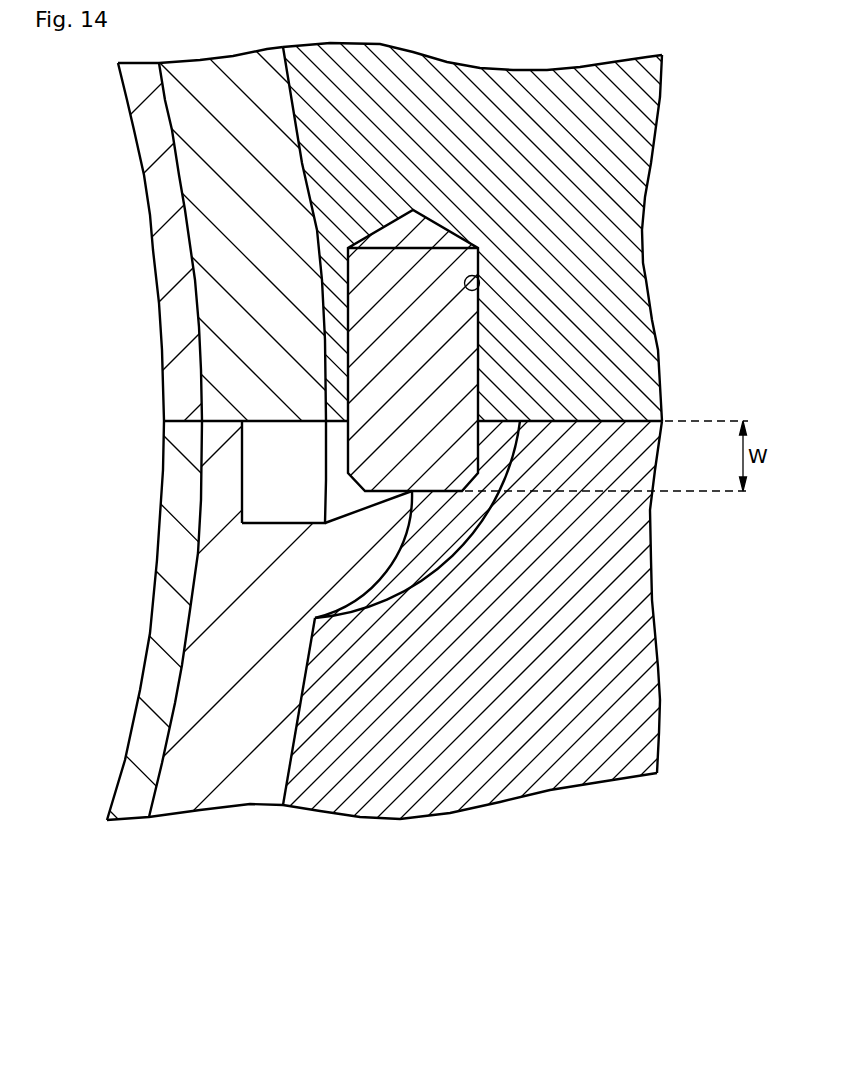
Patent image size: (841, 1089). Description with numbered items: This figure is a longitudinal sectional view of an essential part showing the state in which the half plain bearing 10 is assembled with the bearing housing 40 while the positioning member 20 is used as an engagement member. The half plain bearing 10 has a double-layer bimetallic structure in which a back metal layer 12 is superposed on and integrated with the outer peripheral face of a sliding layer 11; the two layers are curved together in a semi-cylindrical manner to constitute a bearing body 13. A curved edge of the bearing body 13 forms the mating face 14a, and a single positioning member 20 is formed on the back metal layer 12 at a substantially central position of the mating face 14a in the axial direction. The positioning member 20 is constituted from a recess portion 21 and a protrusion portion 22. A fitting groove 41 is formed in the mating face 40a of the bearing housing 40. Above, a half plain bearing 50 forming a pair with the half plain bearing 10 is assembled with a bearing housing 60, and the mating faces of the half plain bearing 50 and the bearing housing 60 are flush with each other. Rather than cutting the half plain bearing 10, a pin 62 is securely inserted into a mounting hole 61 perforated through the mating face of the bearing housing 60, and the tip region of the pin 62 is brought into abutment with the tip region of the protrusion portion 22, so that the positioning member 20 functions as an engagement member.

The half plain bearing 10 is at (122, 579).
The sliding layer 11 is at (133, 815).
The back metal layer 12 is at (172, 810).
The bearing body 13 is at (188, 882).
The mating face 14a is at (174, 404).
The positioning member 20 is at (291, 488).
The recess portion 21 is at (240, 446).
The protrusion portion 22 is at (404, 508).
The bearing housing 40 is at (550, 788).
The mating face 40a is at (626, 407).
The fitting groove 41 is at (425, 583).
The half plain bearing 50 is at (143, 206).
The bearing housing 60 is at (656, 334).
The mounting hole 61 is at (479, 273).
The pin 62 is at (437, 257).